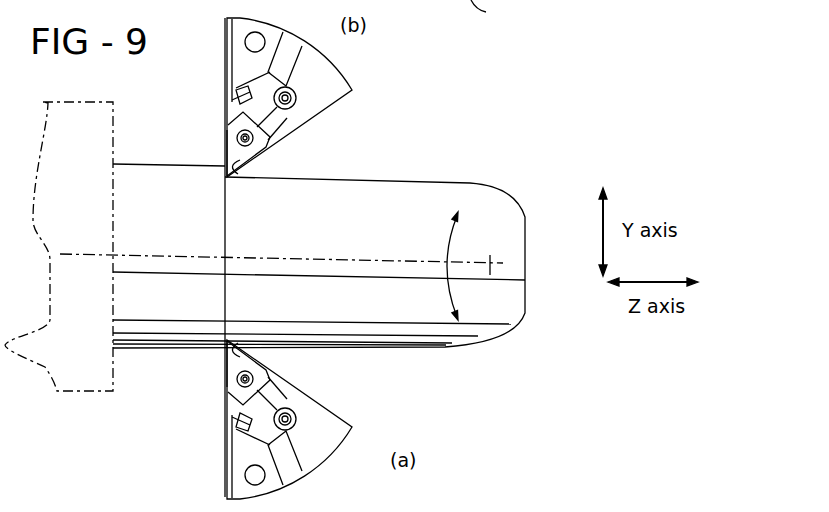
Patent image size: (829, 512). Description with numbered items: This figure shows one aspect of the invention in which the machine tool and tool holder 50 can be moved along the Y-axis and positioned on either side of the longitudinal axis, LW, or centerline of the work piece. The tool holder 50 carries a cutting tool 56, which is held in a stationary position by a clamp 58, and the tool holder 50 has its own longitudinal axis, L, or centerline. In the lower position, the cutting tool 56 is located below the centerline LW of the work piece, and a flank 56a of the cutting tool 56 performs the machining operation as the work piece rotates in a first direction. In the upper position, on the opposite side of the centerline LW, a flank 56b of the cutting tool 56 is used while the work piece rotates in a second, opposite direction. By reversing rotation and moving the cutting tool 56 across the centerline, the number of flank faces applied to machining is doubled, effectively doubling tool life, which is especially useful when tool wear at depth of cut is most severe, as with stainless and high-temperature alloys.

The tool holder 50 is at (320, 68).
The cutting tool 56 is at (238, 152).
The flank 56a is at (227, 358).
The flank 56b is at (228, 155).
The clamp 58 is at (298, 112).
The longitudinal axis of the work piece LW is at (155, 258).
The longitudinal axis of the tool holder L is at (484, 12).